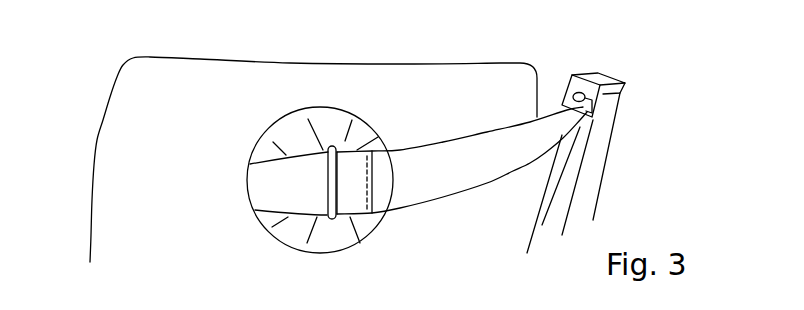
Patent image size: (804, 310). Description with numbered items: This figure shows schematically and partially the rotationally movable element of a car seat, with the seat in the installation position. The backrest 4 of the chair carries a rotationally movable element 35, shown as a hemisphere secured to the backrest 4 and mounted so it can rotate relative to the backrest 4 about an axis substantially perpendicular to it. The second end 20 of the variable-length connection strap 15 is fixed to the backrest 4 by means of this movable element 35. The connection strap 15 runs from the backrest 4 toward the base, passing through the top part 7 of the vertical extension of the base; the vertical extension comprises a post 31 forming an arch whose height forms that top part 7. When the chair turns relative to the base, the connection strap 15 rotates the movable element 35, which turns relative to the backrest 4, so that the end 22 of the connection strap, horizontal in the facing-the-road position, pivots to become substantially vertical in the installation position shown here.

The backrest 4 is at (222, 70).
The rotationally movable element 35 is at (295, 132).
The end of the connection strap 22 is at (356, 156).
The connection strap 15 is at (463, 180).
The top part 7 is at (610, 87).
The post 31 is at (590, 178).
The second end of the connection strap 20 is at (318, 4).